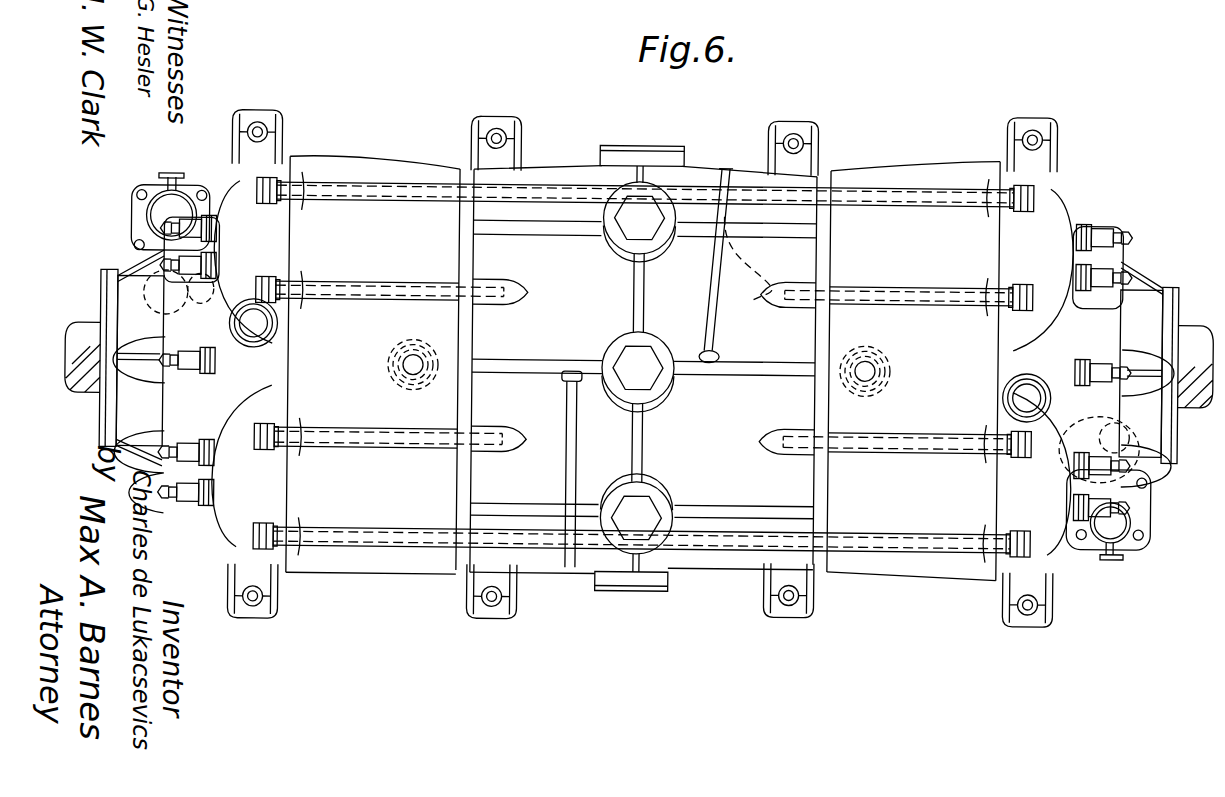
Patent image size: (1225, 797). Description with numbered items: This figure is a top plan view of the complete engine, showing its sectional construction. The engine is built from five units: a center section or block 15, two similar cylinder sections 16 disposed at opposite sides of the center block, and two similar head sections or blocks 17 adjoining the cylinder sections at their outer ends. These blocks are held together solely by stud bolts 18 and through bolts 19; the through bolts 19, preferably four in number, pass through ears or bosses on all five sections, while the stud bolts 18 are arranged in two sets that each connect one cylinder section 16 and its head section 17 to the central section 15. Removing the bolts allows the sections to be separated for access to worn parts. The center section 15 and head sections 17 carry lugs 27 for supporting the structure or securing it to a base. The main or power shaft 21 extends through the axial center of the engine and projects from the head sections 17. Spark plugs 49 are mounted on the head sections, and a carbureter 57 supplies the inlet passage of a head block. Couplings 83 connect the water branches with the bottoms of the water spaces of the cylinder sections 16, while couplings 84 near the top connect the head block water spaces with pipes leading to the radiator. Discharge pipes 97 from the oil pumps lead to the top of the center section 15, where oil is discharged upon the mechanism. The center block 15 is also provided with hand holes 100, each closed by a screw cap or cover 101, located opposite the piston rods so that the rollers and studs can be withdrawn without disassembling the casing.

The center section or block 15 is at (706, 166).
The cylinder section 16 is at (348, 166).
The head section or block 17 is at (236, 190).
The stud bolt 18 is at (375, 290).
The through bolt 19 is at (545, 188).
The main or power shaft 21 is at (77, 332).
The lug 27 is at (268, 132).
The spark plug 49 is at (183, 446).
The carbureter 57 is at (158, 190).
The coupling 83 is at (420, 392).
The coupling 84 is at (247, 350).
The discharge pipe 97 is at (560, 426).
The hand hole 100 is at (622, 245).
The screw cap or cover 101 is at (613, 350).